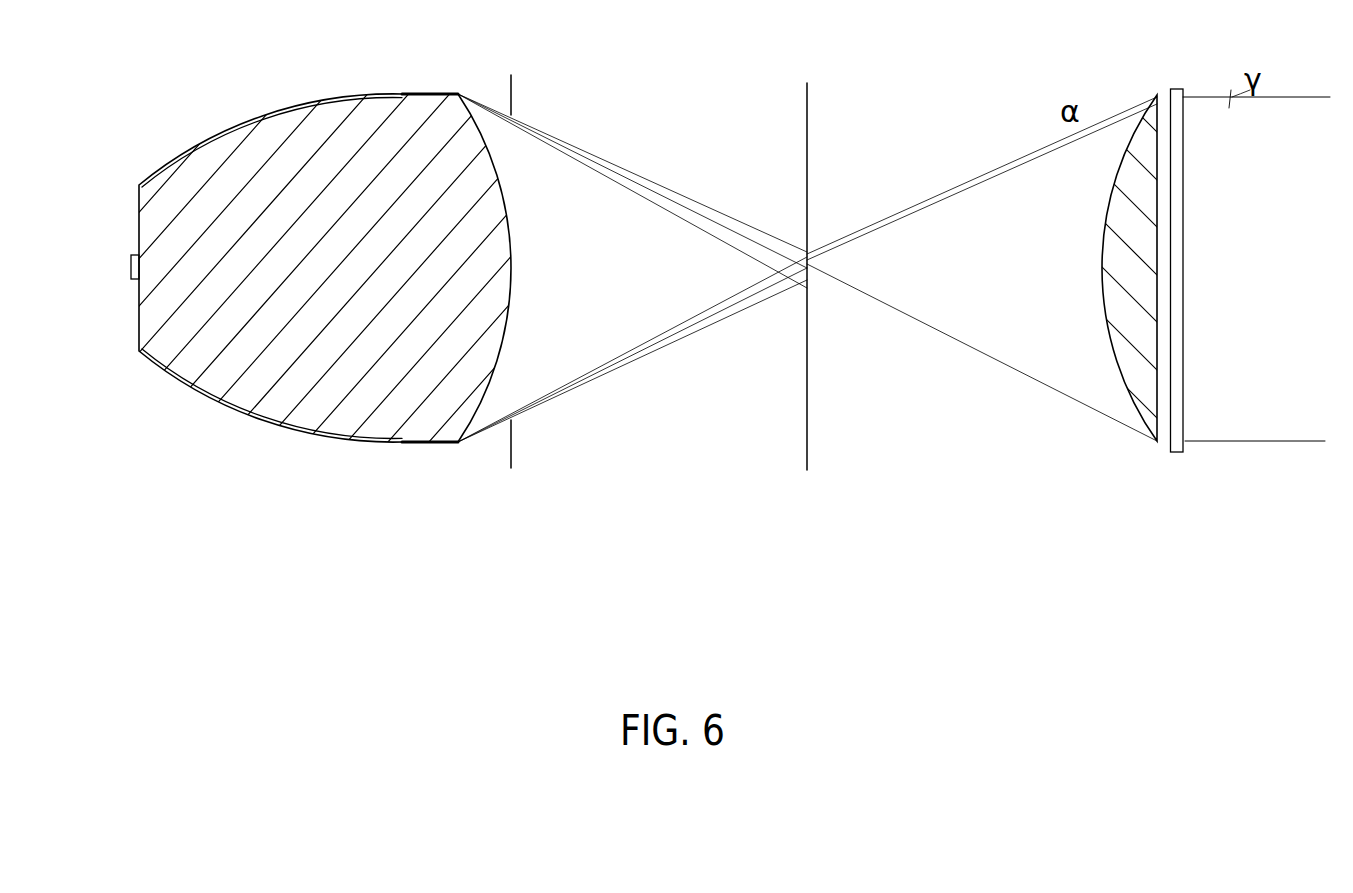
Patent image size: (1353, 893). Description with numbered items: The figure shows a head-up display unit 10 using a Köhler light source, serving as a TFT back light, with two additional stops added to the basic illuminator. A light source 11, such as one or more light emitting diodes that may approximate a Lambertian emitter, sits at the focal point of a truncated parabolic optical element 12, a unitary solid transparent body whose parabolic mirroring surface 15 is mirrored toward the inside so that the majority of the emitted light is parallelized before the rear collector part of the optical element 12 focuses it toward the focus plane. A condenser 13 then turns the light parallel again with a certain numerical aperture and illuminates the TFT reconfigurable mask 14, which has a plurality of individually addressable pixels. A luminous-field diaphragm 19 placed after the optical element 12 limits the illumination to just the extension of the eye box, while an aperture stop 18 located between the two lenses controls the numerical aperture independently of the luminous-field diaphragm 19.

The display unit using a Köhler light source 10 is at (169, 106).
The light source 11 is at (135, 280).
The optical element 12 is at (242, 403).
The condenser 13 is at (1150, 444).
The TFT reconfigurable mask 14 is at (1178, 452).
The mirroring surface 15 is at (433, 445).
The aperture stop 18 is at (808, 430).
The luminous-field diaphragm 19 is at (515, 92).